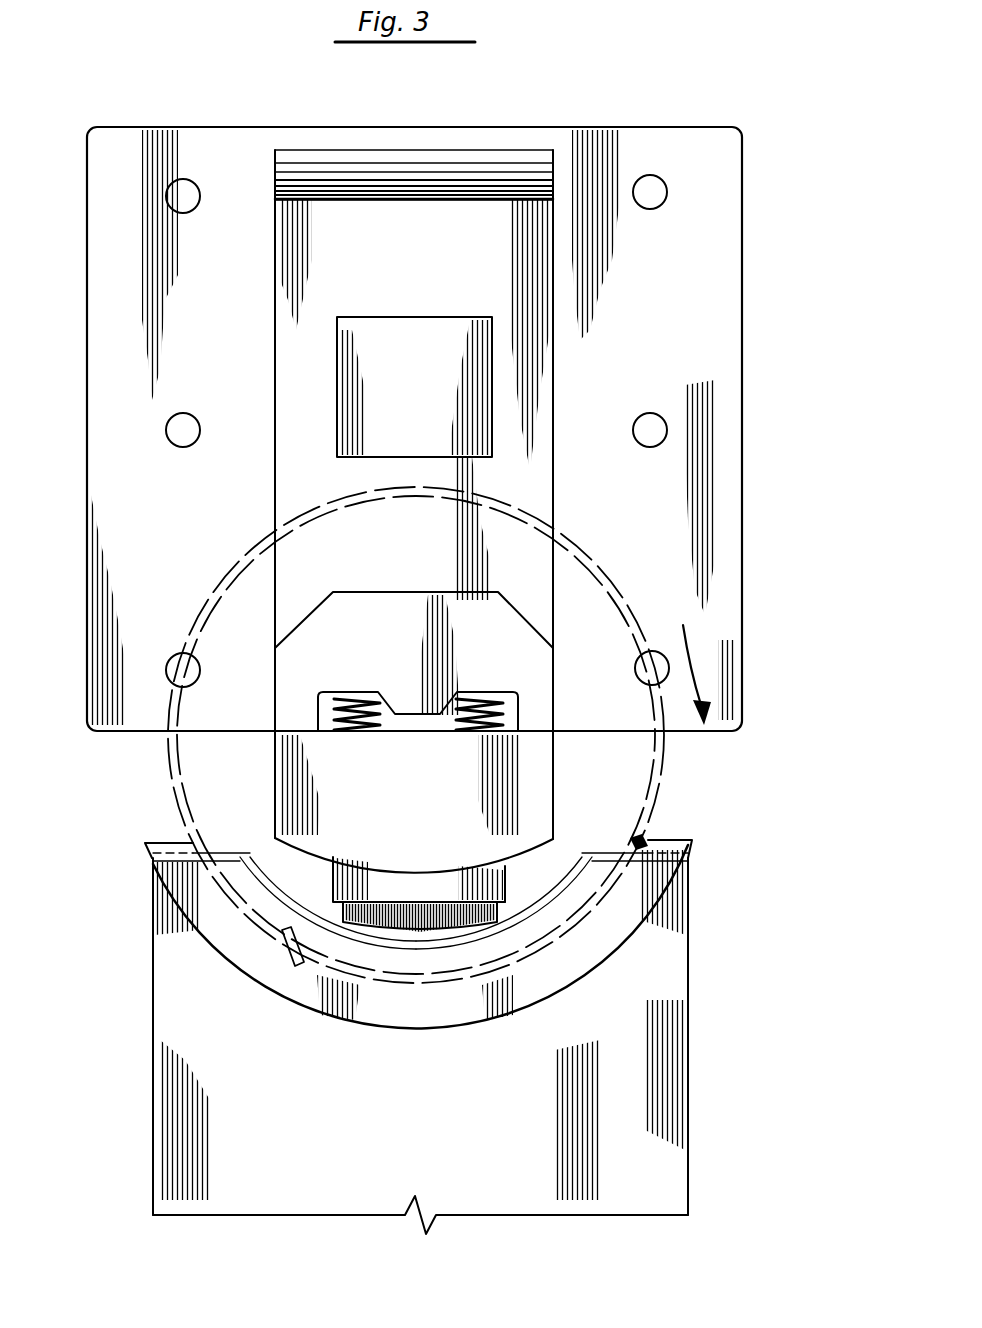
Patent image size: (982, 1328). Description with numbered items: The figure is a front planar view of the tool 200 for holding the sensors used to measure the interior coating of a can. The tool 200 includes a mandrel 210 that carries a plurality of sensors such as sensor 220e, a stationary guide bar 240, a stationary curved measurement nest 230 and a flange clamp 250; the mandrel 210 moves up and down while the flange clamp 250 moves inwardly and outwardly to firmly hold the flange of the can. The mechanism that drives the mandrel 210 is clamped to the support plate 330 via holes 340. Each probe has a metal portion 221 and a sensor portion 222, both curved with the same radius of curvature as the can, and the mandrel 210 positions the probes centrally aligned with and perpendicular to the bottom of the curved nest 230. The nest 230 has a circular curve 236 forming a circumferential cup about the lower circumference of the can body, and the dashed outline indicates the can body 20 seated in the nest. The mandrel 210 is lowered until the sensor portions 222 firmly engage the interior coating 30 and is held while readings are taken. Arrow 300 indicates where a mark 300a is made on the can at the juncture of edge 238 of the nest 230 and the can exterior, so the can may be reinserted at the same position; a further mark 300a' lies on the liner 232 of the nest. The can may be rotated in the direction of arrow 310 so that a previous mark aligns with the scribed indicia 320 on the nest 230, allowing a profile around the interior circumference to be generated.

The roll 20 is at (597, 556).
The interior coating 30 is at (370, 988).
The tool 200 is at (604, 330).
The mandrel 210 is at (557, 703).
The sensor 220e is at (425, 890).
The metal portion 221 is at (382, 892).
The sensor portion 222 is at (506, 907).
The curved measurement nest 230 is at (437, 1005).
The liner left portion 232 is at (272, 858).
The circular curve 236 is at (588, 918).
The edge 238 is at (153, 884).
The guide bar 240 is at (440, 400).
The flange clamp 250 is at (308, 914).
The arrow 300 is at (172, 832).
The mark 300a is at (612, 809).
The locating pin 300a' is at (266, 985).
The arrow 310 is at (700, 680).
The scribed indicia 320 is at (274, 952).
The support plate 330 is at (742, 157).
The holes 340 is at (667, 191).